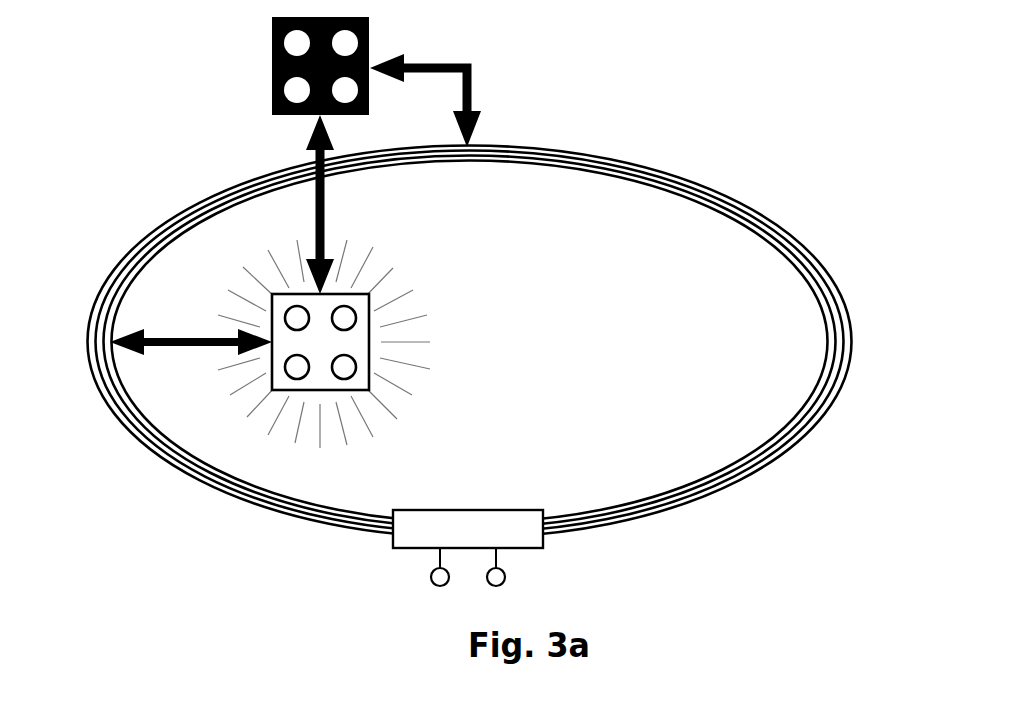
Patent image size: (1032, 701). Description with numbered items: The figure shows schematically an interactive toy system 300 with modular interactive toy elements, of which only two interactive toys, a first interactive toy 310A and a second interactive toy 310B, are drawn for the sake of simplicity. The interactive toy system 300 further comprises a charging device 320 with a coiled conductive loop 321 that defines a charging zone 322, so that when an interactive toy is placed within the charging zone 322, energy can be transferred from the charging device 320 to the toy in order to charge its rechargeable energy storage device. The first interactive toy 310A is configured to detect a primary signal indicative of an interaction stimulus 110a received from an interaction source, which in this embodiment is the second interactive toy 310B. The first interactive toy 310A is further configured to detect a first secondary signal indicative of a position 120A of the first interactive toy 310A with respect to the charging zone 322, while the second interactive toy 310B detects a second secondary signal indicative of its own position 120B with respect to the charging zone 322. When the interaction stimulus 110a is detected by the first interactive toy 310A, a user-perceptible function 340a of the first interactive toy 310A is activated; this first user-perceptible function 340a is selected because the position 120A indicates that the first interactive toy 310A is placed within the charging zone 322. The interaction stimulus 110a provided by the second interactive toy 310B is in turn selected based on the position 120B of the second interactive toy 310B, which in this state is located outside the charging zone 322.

The interactive toy system 300 is at (495, 312).
The first interactive toy 310A is at (323, 327).
The second interactive toy 310B is at (300, 68).
The interaction stimulus 110a is at (325, 204).
The position of the first interactive toy 120A is at (190, 337).
The position of the second interactive toy 120B is at (475, 88).
The charging device 320 is at (487, 530).
The coiled conductive loop 321 is at (715, 481).
The charging zone 322 is at (717, 352).
The user-perceptible function 340a is at (306, 422).